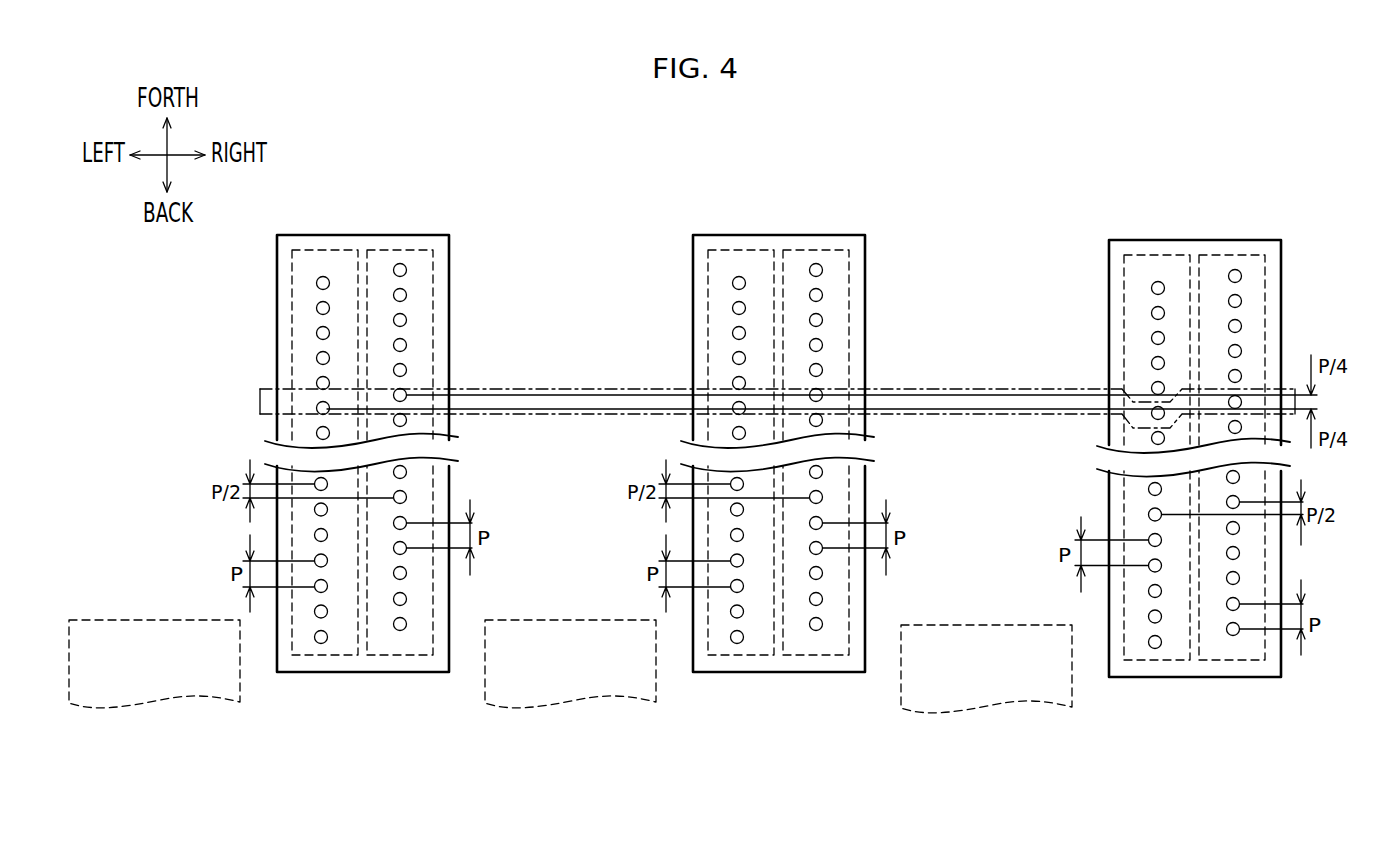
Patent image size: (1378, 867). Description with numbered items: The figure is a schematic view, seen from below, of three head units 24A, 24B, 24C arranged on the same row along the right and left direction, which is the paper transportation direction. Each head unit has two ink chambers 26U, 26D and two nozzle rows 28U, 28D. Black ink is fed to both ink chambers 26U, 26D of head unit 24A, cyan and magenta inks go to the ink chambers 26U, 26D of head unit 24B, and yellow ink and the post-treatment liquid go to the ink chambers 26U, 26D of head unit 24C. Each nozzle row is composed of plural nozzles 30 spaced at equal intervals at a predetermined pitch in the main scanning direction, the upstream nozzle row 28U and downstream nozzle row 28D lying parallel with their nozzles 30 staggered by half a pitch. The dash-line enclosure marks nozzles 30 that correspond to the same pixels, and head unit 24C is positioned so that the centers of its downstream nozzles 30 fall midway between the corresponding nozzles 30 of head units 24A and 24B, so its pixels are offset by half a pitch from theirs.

The head unit 24A is at (363, 235).
The head unit 24B is at (779, 235).
The head unit 24C is at (1195, 240).
The ink chamber 26U is at (322, 250).
The ink chamber 26D is at (403, 250).
The nozzle row 28U is at (322, 656).
The nozzle row 28D is at (398, 656).
The nozzle 30 is at (316, 308).